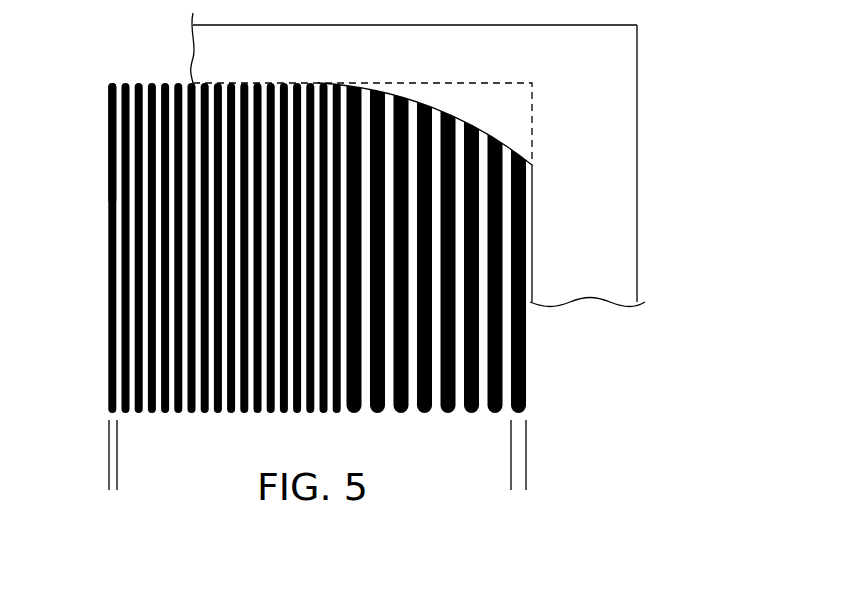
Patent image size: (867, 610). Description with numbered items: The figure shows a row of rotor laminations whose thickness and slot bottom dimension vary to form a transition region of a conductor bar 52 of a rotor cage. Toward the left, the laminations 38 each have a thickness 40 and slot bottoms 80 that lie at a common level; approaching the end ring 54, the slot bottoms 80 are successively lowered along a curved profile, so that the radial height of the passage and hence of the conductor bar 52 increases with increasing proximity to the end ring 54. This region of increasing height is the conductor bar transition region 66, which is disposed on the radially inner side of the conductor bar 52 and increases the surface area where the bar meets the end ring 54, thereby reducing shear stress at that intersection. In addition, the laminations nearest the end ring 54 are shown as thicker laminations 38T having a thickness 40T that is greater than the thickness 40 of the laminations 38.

The lamination 38 is at (108, 353).
The thicker lamination 38T is at (527, 346).
The lamination thickness 40 is at (85, 453).
The thicker lamination thickness 40T is at (478, 453).
The conductor bar 52 is at (414, 48).
The end ring 54 is at (587, 166).
The conductor bar transition region 66 is at (512, 119).
The slot bottom 80 is at (112, 83).